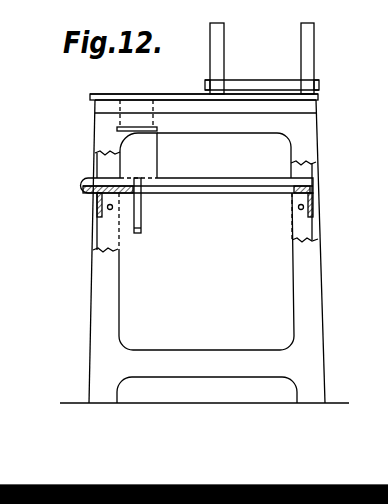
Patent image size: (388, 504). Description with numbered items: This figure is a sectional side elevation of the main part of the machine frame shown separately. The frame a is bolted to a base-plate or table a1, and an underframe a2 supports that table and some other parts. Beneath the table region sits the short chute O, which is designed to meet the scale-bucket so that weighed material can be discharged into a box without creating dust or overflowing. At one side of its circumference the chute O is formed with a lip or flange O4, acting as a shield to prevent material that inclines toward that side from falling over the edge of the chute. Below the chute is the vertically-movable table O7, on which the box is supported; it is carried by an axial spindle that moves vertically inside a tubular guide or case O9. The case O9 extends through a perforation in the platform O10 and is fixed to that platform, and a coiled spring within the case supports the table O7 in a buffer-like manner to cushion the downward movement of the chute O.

The frame a is at (307, 48).
The base-plate or table a1 is at (98, 93).
The underframe a2 is at (304, 144).
The chute O is at (117, 128).
The lip or flange O4 is at (147, 94).
The vertically-movable table O7 is at (158, 180).
The tubular guide or case O9 is at (143, 226).
The platform O10 is at (83, 186).